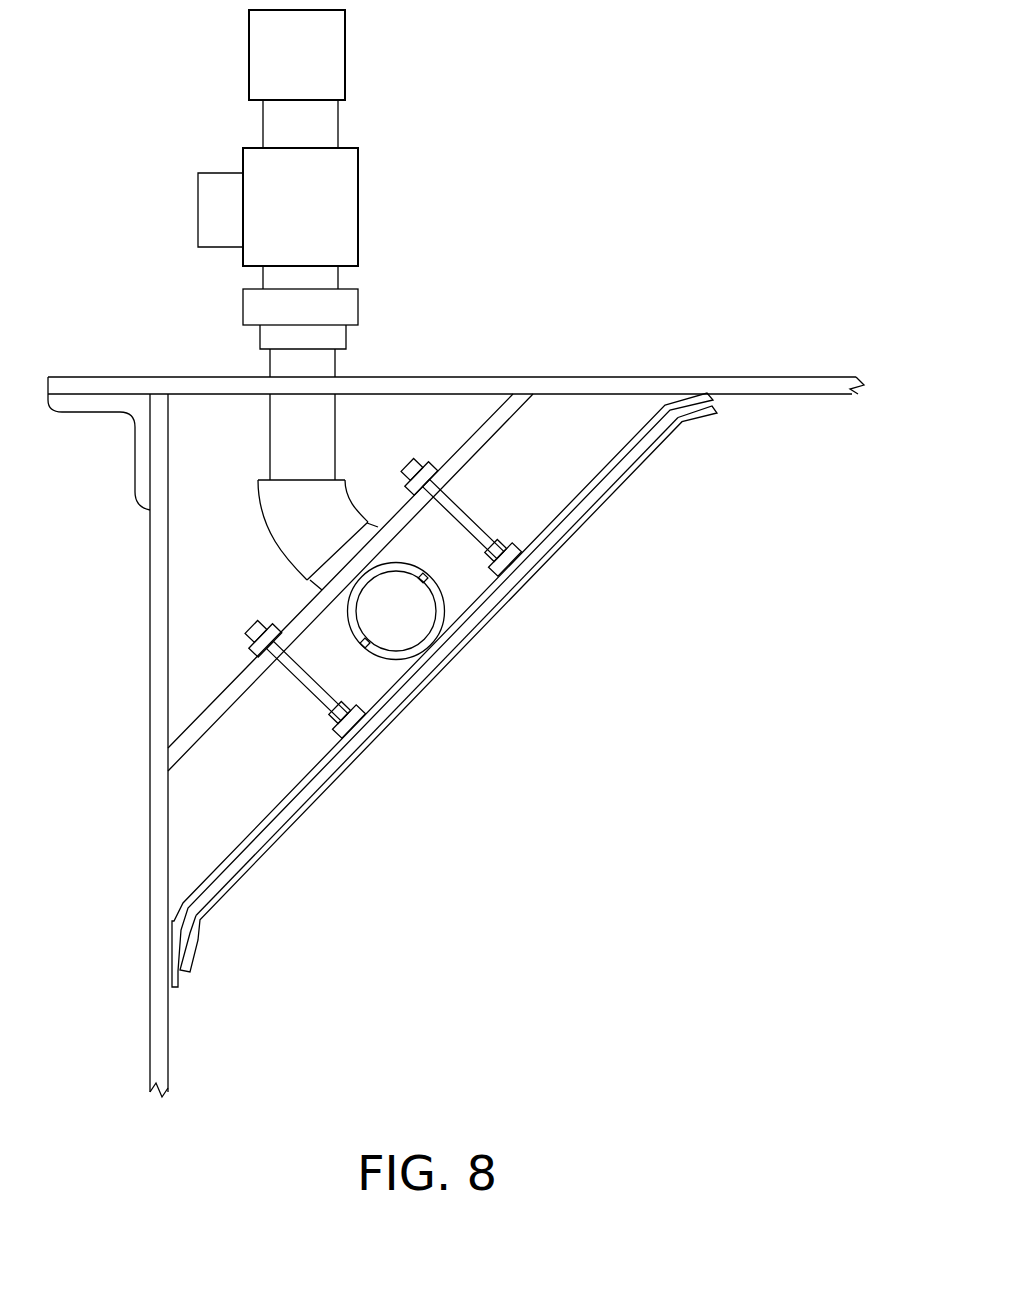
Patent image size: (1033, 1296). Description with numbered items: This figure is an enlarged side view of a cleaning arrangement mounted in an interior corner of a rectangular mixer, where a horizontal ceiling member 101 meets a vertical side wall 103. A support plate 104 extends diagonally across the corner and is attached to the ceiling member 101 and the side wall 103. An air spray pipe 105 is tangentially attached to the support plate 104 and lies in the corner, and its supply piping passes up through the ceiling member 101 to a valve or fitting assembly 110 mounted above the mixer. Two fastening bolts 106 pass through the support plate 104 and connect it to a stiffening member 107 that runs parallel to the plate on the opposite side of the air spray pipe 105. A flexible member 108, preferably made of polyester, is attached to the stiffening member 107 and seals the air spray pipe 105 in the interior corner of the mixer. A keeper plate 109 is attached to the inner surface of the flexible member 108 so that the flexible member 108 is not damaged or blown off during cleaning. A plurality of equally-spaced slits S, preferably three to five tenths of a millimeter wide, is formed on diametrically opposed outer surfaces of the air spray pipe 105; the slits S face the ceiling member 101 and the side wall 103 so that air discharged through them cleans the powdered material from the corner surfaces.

The ceiling member 101 is at (447, 384).
The side wall 103 is at (168, 553).
The support plate 104 is at (490, 432).
The air spray pipe 105 is at (423, 645).
The fastening bolt 106 is at (468, 520).
The stiffening member 107 is at (647, 427).
The flexible member 108 is at (605, 493).
The keeper plate 109 is at (562, 540).
The valve 110 is at (330, 217).
The slit S is at (430, 573).